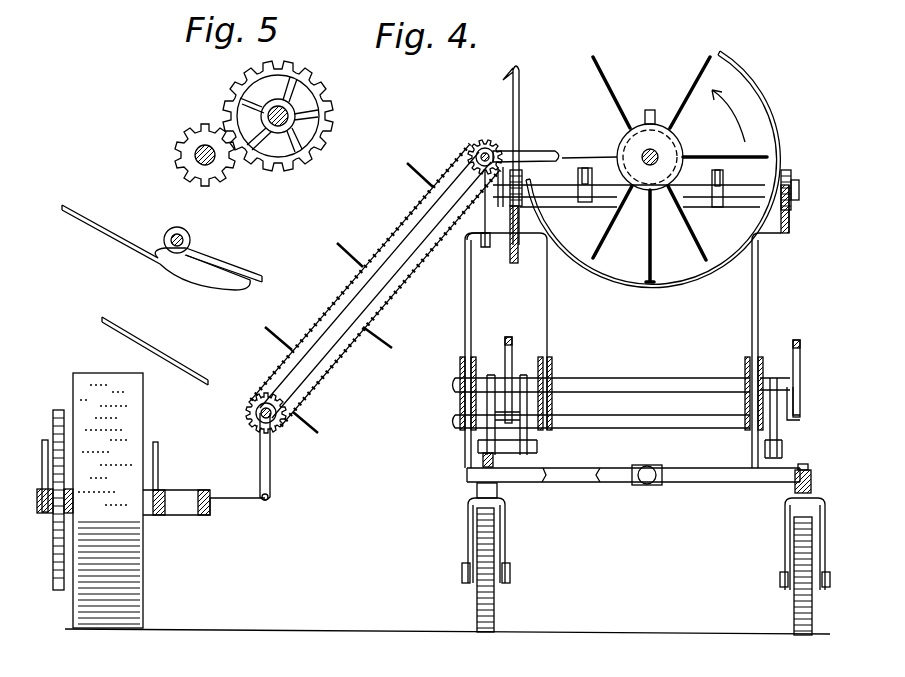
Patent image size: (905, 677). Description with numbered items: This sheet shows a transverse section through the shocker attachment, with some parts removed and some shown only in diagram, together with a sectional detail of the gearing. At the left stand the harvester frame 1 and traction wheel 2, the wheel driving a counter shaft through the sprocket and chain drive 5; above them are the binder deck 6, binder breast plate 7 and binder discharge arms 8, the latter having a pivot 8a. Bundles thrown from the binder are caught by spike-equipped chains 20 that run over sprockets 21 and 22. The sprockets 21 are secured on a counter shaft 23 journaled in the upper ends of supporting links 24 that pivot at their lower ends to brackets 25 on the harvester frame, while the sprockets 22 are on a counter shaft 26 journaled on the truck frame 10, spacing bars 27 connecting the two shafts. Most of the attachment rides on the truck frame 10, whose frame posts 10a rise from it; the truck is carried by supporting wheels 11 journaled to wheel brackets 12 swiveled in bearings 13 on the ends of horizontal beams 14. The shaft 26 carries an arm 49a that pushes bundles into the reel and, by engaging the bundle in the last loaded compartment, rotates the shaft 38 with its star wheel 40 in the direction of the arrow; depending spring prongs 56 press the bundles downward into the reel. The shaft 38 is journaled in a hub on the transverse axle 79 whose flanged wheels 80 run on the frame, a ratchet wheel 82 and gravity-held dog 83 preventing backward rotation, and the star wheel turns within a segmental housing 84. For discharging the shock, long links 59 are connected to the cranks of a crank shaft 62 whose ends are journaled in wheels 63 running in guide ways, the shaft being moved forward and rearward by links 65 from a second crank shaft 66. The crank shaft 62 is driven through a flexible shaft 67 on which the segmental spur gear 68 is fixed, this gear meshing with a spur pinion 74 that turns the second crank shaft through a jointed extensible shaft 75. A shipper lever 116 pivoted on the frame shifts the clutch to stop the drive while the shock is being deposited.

In FIG. 4, the harvester frame 1 is at (188, 508).
In FIG. 4, the traction wheel 2 is at (144, 596).
In FIG. 4, the sprocket and chain drive 5 is at (56, 540).
In FIG. 5, the binder deck 6 is at (163, 352).
In FIG. 5, the binder breast plate 7 is at (128, 250).
In FIG. 5, the binder discharge arms 8 is at (217, 250).
In FIG. 5, the pivot 8a is at (182, 234).
In FIG. 4, the truck frame 10 is at (548, 328).
In FIG. 4, the frame post 10a is at (804, 232).
In FIG. 4, the supporting wheels 11 is at (490, 566).
In FIG. 4, the wheel brackets 12 is at (467, 521).
In FIG. 4, the bearings 13 is at (497, 486).
In FIG. 4, the horizontal beams 14 is at (600, 481).
In FIG. 4, the spike-equipped chains 20 is at (375, 288).
In FIG. 4, the sprockets 21 is at (246, 420).
In FIG. 4, the sprockets 22 is at (468, 168).
In FIG. 4, the counter shaft 23 is at (258, 430).
In FIG. 4, the supporting links 24 is at (295, 471).
In FIG. 4, the brackets 25 is at (237, 521).
In FIG. 4, the counter shaft 26 is at (470, 155).
In FIG. 4, the spacing bars 27 is at (298, 371).
In FIG. 4, the shaft 38 is at (660, 157).
In FIG. 4, the star wheel 40 is at (618, 97).
In FIG. 4, the arm 49a is at (558, 160).
In FIG. 4, the depending prongs 56 is at (519, 139).
In FIG. 4, the long links 59 is at (511, 355).
In FIG. 4, the crank shaft 62 is at (622, 383).
In FIG. 4, the wheels 63 is at (455, 367).
In FIG. 4, the links 65 is at (478, 440).
In FIG. 4, the second crank shaft 66 is at (668, 421).
In FIG. 5, the flexible longitudinally extensible shaft 67 is at (308, 142).
In FIG. 5, the segmental spur gear 68 is at (326, 118).
In FIG. 5, the spur pinion 74 is at (193, 131).
In FIG. 5, the jointed extensible shaft 75 is at (190, 153).
In FIG. 4, the transverse axle 79 is at (558, 198).
In FIG. 4, the flanged wheels 80 is at (508, 205).
In FIG. 4, the ratchet wheel 82 is at (647, 187).
In FIG. 4, the gravity-held dog 83 is at (649, 109).
In FIG. 4, the segmental housing 84 is at (692, 283).
In FIG. 4, the shipper lever 116 is at (486, 214).